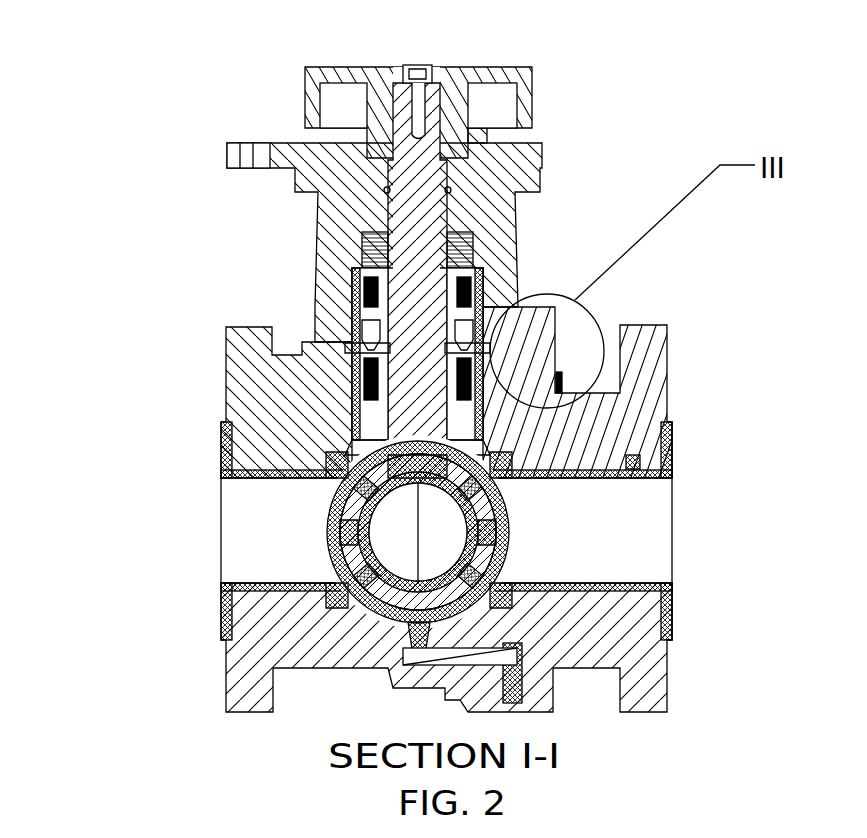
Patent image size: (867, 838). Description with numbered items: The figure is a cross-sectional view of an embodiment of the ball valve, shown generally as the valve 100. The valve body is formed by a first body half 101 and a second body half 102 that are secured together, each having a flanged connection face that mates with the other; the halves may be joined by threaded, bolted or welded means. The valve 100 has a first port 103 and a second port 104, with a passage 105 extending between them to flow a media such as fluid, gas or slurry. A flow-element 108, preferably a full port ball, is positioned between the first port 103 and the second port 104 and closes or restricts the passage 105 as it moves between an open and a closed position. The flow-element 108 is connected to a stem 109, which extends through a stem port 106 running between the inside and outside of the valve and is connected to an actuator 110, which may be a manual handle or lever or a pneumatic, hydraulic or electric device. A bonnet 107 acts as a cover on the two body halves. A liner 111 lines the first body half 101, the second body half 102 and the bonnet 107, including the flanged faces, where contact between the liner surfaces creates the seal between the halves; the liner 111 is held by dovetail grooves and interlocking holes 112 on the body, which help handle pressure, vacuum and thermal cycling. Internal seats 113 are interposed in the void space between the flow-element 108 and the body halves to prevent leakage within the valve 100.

The valve 100 is at (188, 48).
The first body half 101 is at (255, 362).
The second body half 102 is at (555, 412).
The first port 103 is at (222, 505).
The second port 104 is at (673, 534).
The passage 105 is at (250, 542).
The stem port 106 is at (367, 422).
The bonnet 107 is at (500, 228).
The flow-element 108 is at (500, 498).
The stem 109 is at (415, 225).
The actuator 110 is at (455, 90).
The liner 111 is at (353, 308).
The dovetail grooves and interlocking holes 112 is at (632, 463).
The internal seats 113 is at (333, 465).